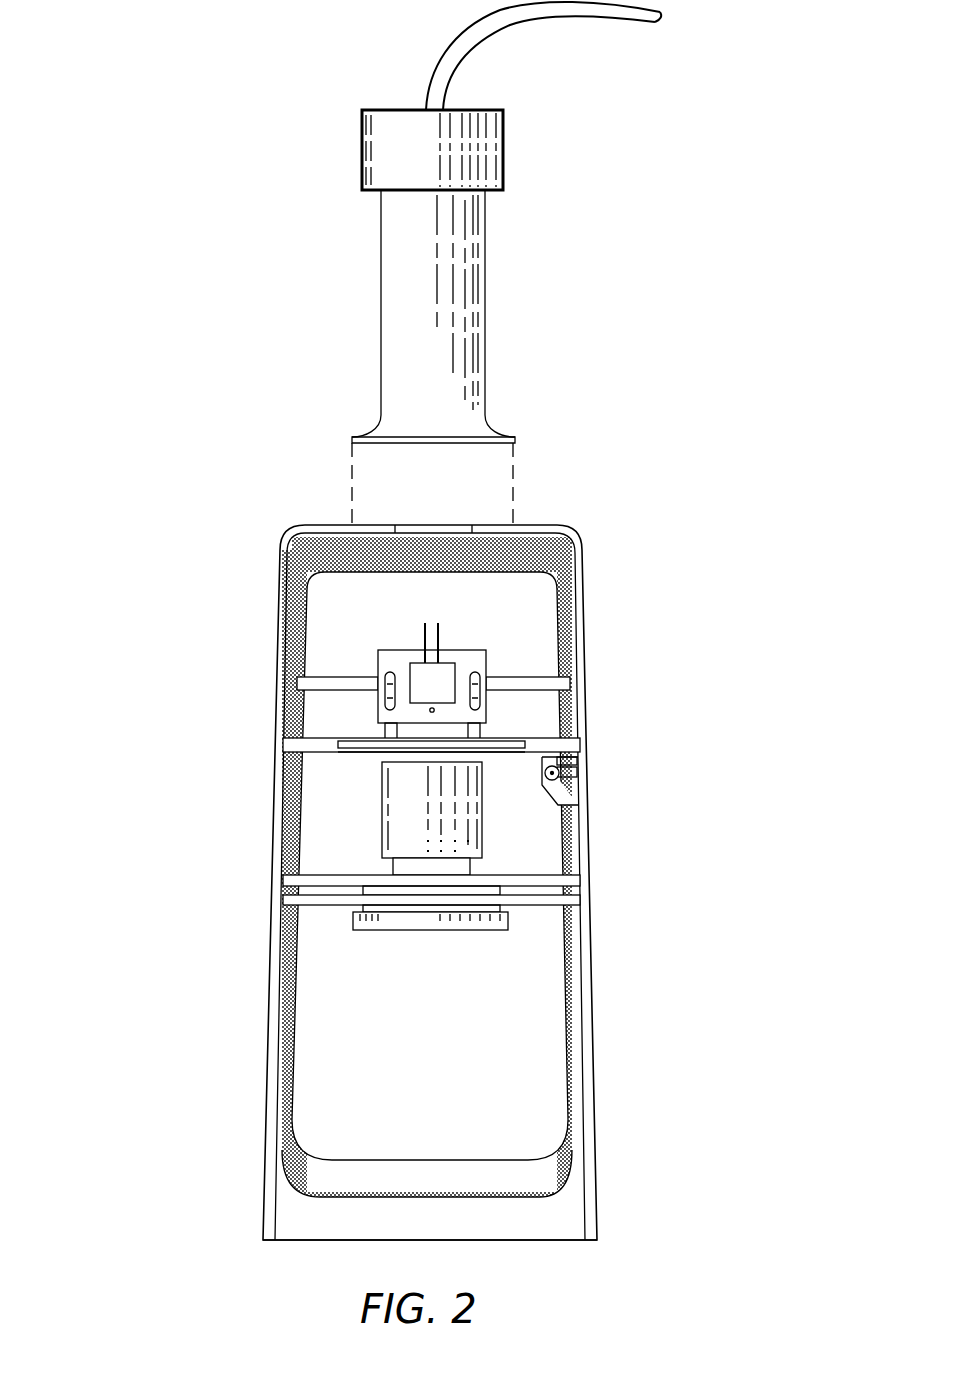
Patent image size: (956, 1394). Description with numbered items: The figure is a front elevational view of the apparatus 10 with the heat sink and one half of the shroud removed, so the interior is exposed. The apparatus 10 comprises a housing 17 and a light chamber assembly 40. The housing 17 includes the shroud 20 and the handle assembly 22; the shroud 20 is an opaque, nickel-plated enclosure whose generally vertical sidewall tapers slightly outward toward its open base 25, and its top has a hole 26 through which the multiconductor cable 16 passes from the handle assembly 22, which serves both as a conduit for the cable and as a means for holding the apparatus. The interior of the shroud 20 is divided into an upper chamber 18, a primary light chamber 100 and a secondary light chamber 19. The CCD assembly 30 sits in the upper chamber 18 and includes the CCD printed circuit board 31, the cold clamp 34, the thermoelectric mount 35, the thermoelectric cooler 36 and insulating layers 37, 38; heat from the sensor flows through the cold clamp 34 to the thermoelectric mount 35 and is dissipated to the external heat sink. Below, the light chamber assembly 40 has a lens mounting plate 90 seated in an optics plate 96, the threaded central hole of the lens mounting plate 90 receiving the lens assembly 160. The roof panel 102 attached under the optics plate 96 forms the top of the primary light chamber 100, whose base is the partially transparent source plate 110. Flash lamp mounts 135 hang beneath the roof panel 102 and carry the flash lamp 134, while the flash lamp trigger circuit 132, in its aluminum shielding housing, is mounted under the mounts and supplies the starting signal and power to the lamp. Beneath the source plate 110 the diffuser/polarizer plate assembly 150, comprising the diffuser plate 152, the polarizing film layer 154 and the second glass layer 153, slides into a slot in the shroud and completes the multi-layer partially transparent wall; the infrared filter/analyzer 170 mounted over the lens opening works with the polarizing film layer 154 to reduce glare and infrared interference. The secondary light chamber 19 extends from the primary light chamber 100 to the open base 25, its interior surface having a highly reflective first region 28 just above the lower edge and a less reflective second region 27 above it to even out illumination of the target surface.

The apparatus 10 is at (625, 418).
The multiconductor cable 16 is at (437, 3).
The housing 17 is at (302, 187).
The upper chamber 18 is at (370, 588).
The secondary light chamber 19 is at (525, 1015).
The shroud 20 is at (580, 525).
The handle assembly 22 is at (487, 262).
The open base 25 is at (352, 1240).
The hole 26 is at (418, 533).
The second region 27 is at (530, 1105).
The first region 28 is at (530, 1217).
The CCD assembly 30 is at (692, 655).
The CCD printed circuit board 31 is at (537, 673).
The cold clamp 34 is at (388, 708).
The thermoelectric mount 35 is at (490, 660).
The thermoelectric cooler 36 is at (447, 683).
The insulating layer 37 is at (388, 695).
The insulating layer 38 is at (385, 722).
The light chamber assembly 40 is at (125, 752).
The lens mounting plate 90 is at (510, 736).
The optics plate 96 is at (563, 742).
The primary light chamber 100 is at (515, 825).
The roof panel 102 is at (578, 745).
The source plate 110 is at (582, 880).
The flash lamp trigger circuit 132 is at (580, 797).
The flash lamp 134 is at (572, 763).
The flash lamp mount 135 is at (568, 783).
The diffuser/polarizer plate assembly 150 is at (262, 890).
The diffuser plate 152 is at (582, 900).
The second glass layer 153 is at (292, 911).
The polarizing film layer 154 is at (284, 901).
The lens assembly 160 is at (484, 848).
The infrared filter/analyzer 170 is at (353, 923).